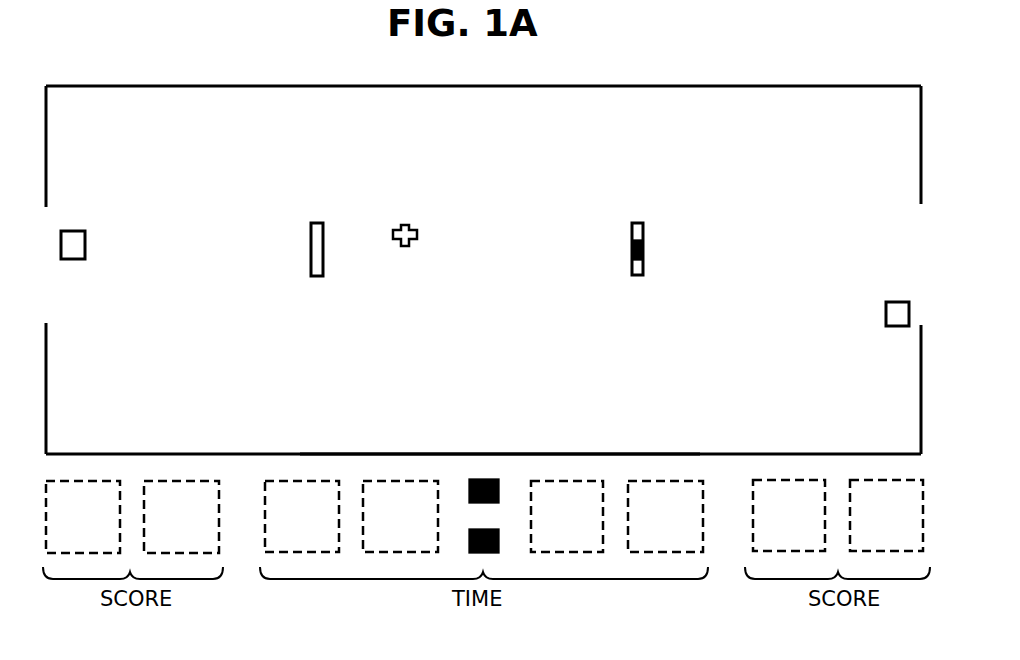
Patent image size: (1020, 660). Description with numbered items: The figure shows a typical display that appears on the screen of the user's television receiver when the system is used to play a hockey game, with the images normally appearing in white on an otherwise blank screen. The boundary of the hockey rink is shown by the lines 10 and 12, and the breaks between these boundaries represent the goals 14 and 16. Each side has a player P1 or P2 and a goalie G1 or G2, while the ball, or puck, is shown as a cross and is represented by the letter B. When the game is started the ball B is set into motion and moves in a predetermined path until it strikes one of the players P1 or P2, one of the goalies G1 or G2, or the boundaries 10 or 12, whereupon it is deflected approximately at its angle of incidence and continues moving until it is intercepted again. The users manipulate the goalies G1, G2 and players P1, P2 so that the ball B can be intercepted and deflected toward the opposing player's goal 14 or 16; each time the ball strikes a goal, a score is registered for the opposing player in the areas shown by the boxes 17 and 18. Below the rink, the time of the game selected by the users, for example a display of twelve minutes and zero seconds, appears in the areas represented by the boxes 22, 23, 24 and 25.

The boundary line 10 is at (606, 86).
The boundary line 12 is at (497, 454).
The goal 14 is at (60, 303).
The goal 16 is at (928, 283).
The score box 17 is at (165, 553).
The score box 18 is at (866, 552).
The time display box 22 is at (321, 553).
The time display box 23 is at (385, 553).
The time display box 24 is at (558, 553).
The time display box 25 is at (684, 553).
The goalie G1 is at (76, 260).
The goalie G2 is at (892, 327).
The player P1 is at (317, 277).
The player P2 is at (637, 276).
The ball B is at (406, 247).